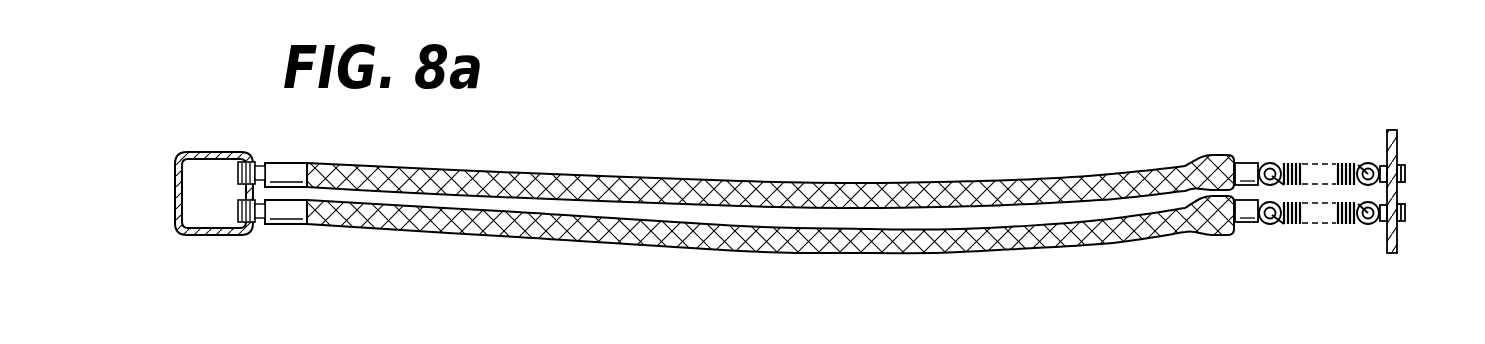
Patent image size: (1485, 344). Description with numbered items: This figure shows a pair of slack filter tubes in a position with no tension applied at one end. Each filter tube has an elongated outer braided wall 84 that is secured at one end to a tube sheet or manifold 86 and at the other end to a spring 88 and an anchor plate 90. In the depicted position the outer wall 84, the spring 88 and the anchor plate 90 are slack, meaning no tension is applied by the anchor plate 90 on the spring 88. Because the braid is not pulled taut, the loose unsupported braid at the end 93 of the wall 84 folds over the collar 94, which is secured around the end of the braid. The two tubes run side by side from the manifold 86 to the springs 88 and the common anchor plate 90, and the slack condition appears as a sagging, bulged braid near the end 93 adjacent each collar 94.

The outer wall 84 is at (850, 182).
The tube sheet or manifold 86 is at (213, 152).
The spring 88 is at (1343, 162).
The anchor plate 90 is at (1398, 149).
The end 93 is at (1193, 155).
The collar 94 is at (1246, 162).